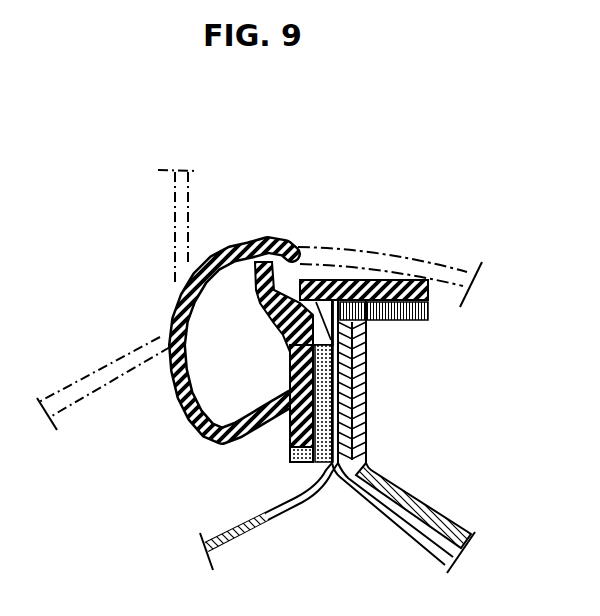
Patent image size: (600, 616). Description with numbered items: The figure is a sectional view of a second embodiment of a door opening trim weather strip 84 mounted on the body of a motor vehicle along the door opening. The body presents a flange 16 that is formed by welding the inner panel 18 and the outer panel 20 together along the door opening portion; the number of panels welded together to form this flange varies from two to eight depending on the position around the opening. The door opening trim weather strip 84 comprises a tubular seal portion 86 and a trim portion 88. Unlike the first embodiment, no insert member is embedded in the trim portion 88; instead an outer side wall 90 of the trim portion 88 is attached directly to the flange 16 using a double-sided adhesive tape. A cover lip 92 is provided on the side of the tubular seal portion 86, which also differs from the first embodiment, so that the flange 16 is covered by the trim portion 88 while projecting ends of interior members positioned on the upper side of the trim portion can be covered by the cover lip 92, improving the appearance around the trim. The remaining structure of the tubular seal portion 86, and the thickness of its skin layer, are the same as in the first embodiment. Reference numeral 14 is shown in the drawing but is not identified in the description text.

The window glass 14 is at (137, 350).
The flange 16 is at (368, 393).
The inner panel 18 is at (412, 498).
The outer panel 20 is at (237, 530).
The door opening trim weather strip 84 is at (172, 390).
The tubular seal portion 86 is at (217, 245).
The trim portion 88 is at (320, 275).
The outer side wall 90 is at (293, 442).
The cover lip 92 is at (285, 243).